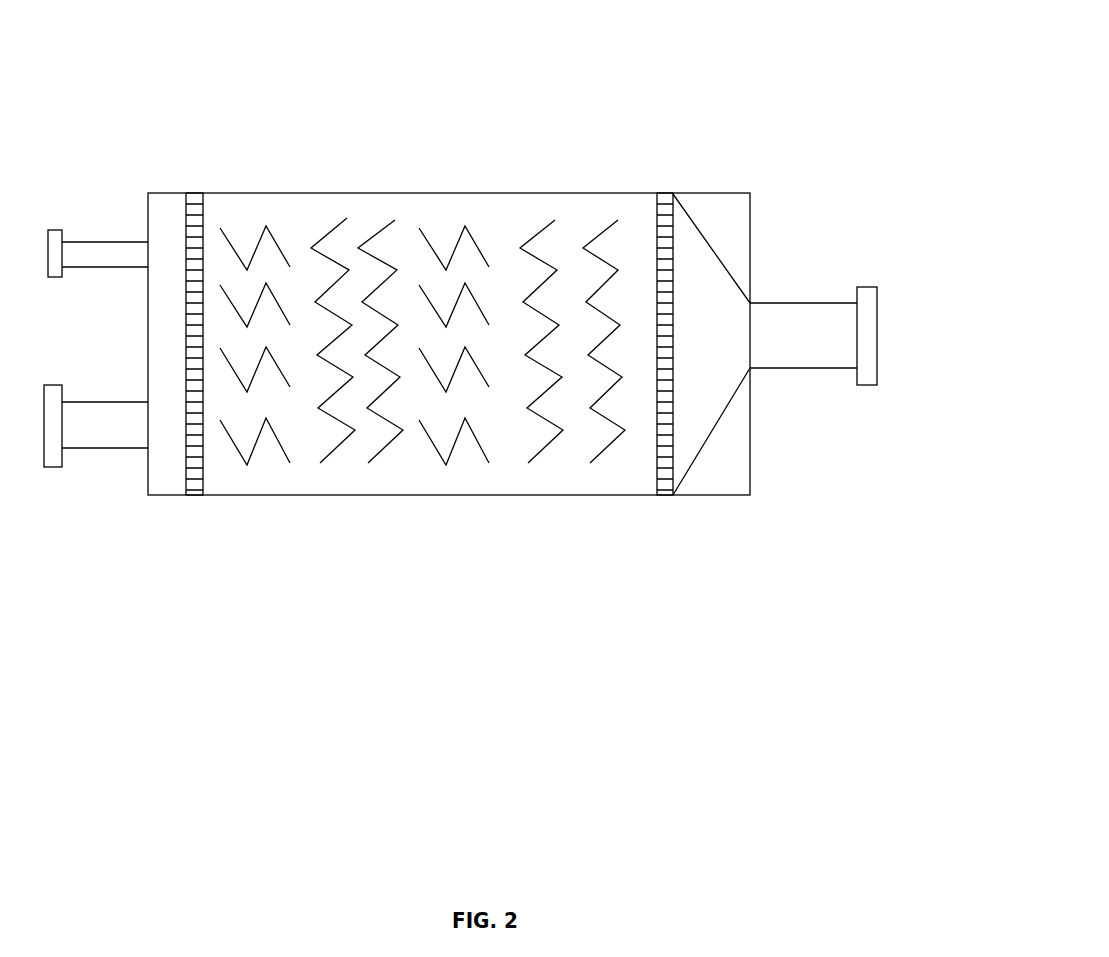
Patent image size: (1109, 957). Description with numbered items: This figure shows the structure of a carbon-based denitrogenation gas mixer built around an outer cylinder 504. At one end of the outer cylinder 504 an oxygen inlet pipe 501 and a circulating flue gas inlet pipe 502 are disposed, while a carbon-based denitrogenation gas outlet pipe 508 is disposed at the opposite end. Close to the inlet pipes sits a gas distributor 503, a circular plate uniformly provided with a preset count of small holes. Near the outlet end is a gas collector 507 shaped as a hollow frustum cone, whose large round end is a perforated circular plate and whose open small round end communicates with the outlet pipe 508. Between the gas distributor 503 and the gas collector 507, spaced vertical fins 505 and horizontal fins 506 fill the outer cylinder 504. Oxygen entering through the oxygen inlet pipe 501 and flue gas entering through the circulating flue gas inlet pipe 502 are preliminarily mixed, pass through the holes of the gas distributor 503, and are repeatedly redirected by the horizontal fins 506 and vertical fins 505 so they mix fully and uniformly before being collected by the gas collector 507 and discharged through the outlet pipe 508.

The oxygen inlet pipe 501 is at (86, 247).
The circulating flue gas inlet pipe 502 is at (84, 427).
The gas distributor 503 is at (203, 214).
The outer cylinder 504 is at (293, 193).
The vertical fins 505 is at (381, 230).
The horizontal fins 506 is at (473, 230).
The gas collector 507 is at (693, 220).
The carbon-based denitrogenation gas outlet pipe 508 is at (803, 333).